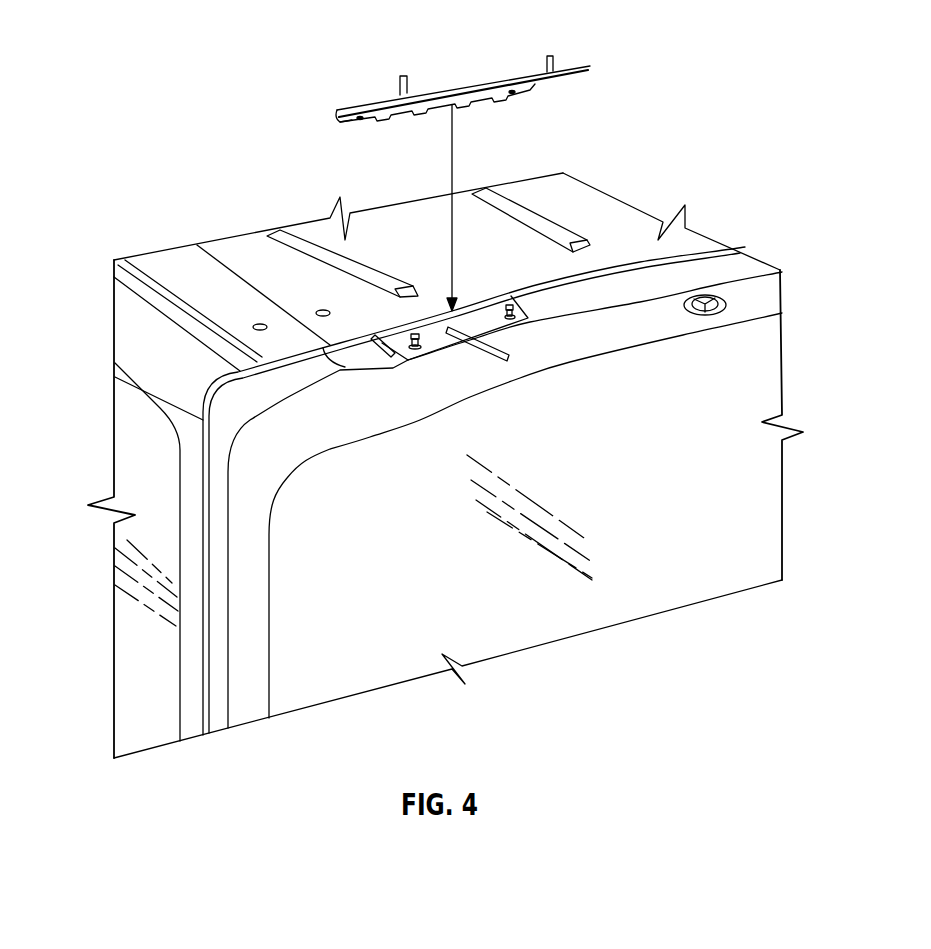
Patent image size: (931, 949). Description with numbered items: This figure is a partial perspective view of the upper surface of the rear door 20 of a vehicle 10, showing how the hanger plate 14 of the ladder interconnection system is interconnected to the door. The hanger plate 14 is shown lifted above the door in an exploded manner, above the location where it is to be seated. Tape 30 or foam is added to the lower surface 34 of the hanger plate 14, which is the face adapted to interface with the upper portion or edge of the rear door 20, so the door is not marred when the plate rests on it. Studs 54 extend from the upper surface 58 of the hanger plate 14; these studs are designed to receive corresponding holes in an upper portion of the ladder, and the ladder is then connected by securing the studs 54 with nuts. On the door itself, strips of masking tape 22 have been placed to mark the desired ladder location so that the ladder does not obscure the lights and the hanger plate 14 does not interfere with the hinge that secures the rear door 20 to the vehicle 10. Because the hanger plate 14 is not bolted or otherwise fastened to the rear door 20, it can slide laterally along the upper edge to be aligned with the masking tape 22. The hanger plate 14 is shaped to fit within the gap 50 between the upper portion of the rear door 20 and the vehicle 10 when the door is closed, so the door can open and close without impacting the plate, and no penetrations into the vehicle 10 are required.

The vehicle 10 is at (170, 366).
The hanger plate 14 is at (468, 82).
The rear door 20 is at (728, 477).
The masking tape 22 is at (384, 352).
The tape 30 is at (552, 72).
The lower surface 34 is at (346, 124).
The gap 50 is at (381, 320).
The stud 54 is at (400, 80).
The upper surface 58 is at (499, 307).